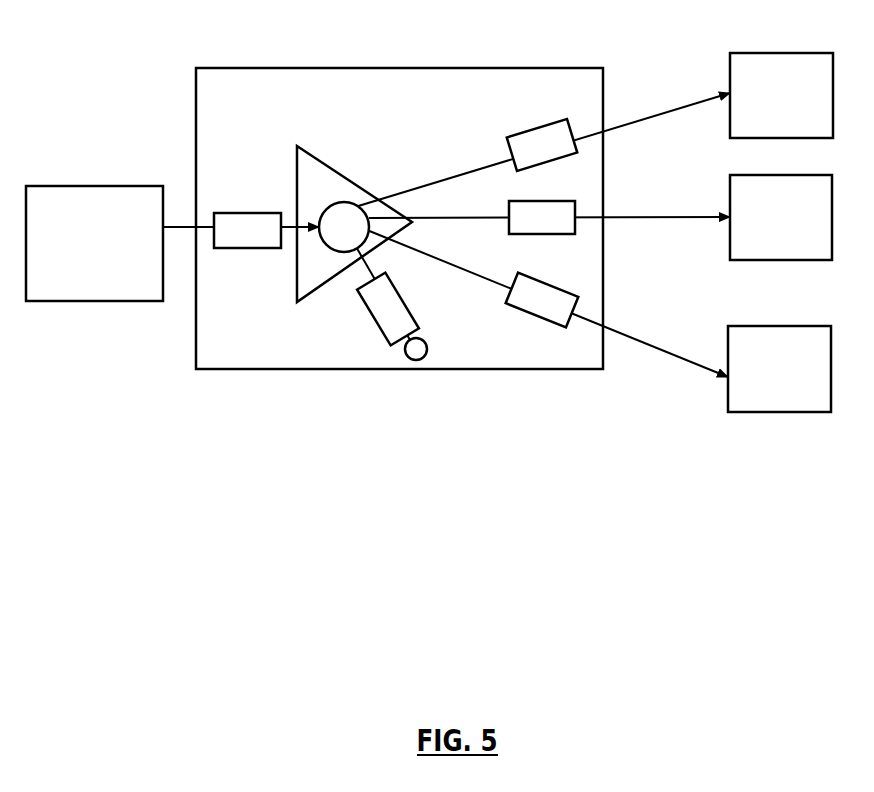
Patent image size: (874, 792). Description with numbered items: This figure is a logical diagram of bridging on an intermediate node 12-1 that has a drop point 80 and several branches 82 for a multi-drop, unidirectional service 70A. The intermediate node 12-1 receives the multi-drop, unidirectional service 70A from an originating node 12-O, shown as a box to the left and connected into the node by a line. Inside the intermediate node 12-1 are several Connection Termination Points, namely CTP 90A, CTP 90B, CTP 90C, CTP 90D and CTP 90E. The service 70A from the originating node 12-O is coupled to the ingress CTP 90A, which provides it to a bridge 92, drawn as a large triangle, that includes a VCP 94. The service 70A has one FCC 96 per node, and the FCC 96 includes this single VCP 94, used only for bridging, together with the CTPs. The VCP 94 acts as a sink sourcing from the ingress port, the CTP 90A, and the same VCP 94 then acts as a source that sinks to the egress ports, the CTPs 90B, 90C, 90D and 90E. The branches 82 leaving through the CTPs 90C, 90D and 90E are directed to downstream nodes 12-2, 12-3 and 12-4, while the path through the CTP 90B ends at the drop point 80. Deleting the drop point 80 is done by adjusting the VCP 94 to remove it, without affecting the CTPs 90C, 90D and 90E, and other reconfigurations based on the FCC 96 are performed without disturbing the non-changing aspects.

The intermediate node 12-1 is at (235, 67).
The originating node 12-O is at (94, 243).
The downstream node 12-2 is at (781, 95).
The downstream node 12-3 is at (781, 217).
The downstream node 12-4 is at (779, 369).
The multi-drop, unidirectional service 70A is at (184, 228).
The drop point 80 is at (407, 355).
The branches 82 is at (444, 156).
The bridge 92 is at (317, 158).
The VCP 94 is at (332, 251).
The FCC 96 is at (437, 102).
The Connection Termination Point 90A is at (250, 248).
The Connection Termination Point 90B is at (363, 297).
The Connection Termination Point 90C is at (533, 132).
The Connection Termination Point 90D is at (553, 198).
The Connection Termination Point 90E is at (562, 287).